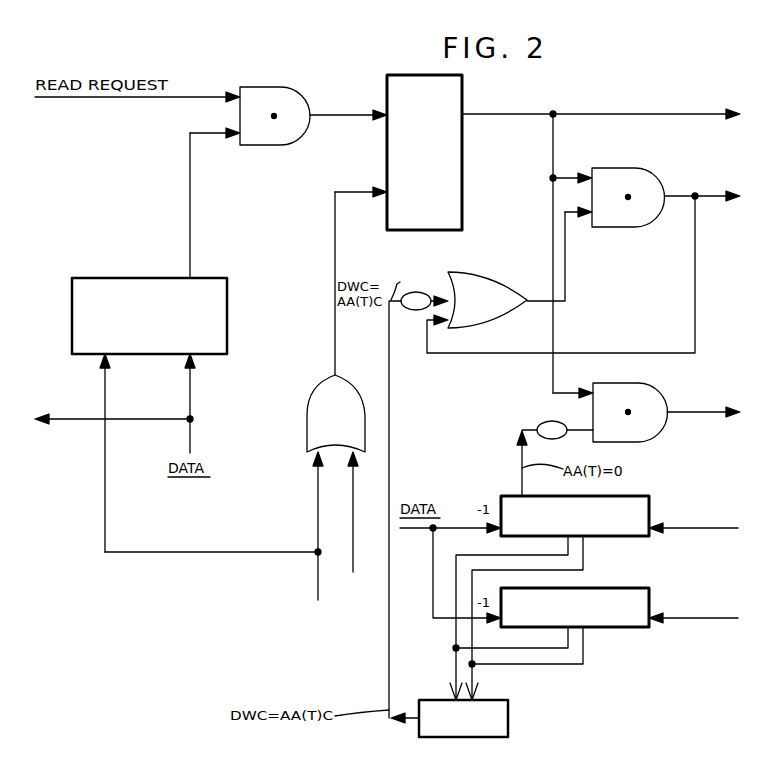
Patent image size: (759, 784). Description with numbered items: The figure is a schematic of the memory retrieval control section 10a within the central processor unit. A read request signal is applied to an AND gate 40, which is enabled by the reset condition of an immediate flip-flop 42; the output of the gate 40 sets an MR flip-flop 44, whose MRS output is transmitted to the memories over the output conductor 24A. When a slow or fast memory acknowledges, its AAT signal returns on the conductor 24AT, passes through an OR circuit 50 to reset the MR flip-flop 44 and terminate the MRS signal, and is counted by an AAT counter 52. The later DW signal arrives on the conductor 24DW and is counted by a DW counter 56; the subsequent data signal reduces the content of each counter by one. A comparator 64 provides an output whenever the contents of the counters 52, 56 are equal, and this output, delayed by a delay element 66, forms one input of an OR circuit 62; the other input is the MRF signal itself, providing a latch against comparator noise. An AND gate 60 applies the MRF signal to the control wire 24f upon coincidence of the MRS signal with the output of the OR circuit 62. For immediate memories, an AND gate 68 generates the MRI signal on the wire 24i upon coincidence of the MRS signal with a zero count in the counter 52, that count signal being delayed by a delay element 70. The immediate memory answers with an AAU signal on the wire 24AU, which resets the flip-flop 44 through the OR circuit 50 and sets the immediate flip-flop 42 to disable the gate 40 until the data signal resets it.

The memory retrieval control section 10a is at (598, 90).
The AND gate 40 is at (280, 87).
The immediate flip-flop 42 is at (228, 310).
The MR flip-flop 44 is at (462, 183).
The OR circuit 50 is at (312, 408).
The AAT counter 52 is at (628, 496).
The DW counter 56 is at (612, 588).
The AND gate 60 is at (628, 227).
The OR circuit 62 is at (488, 272).
The comparator 64 is at (508, 714).
The delay element 66 is at (413, 311).
The AND gate 68 is at (645, 383).
The delay element 70 is at (548, 421).
The MR(S) output line 24A is at (697, 113).
The control wire 24f is at (710, 198).
The wire 24i is at (692, 414).
The conductor 24AT is at (673, 528).
The wire 24AU is at (318, 581).
The conductor 24DW is at (683, 620).